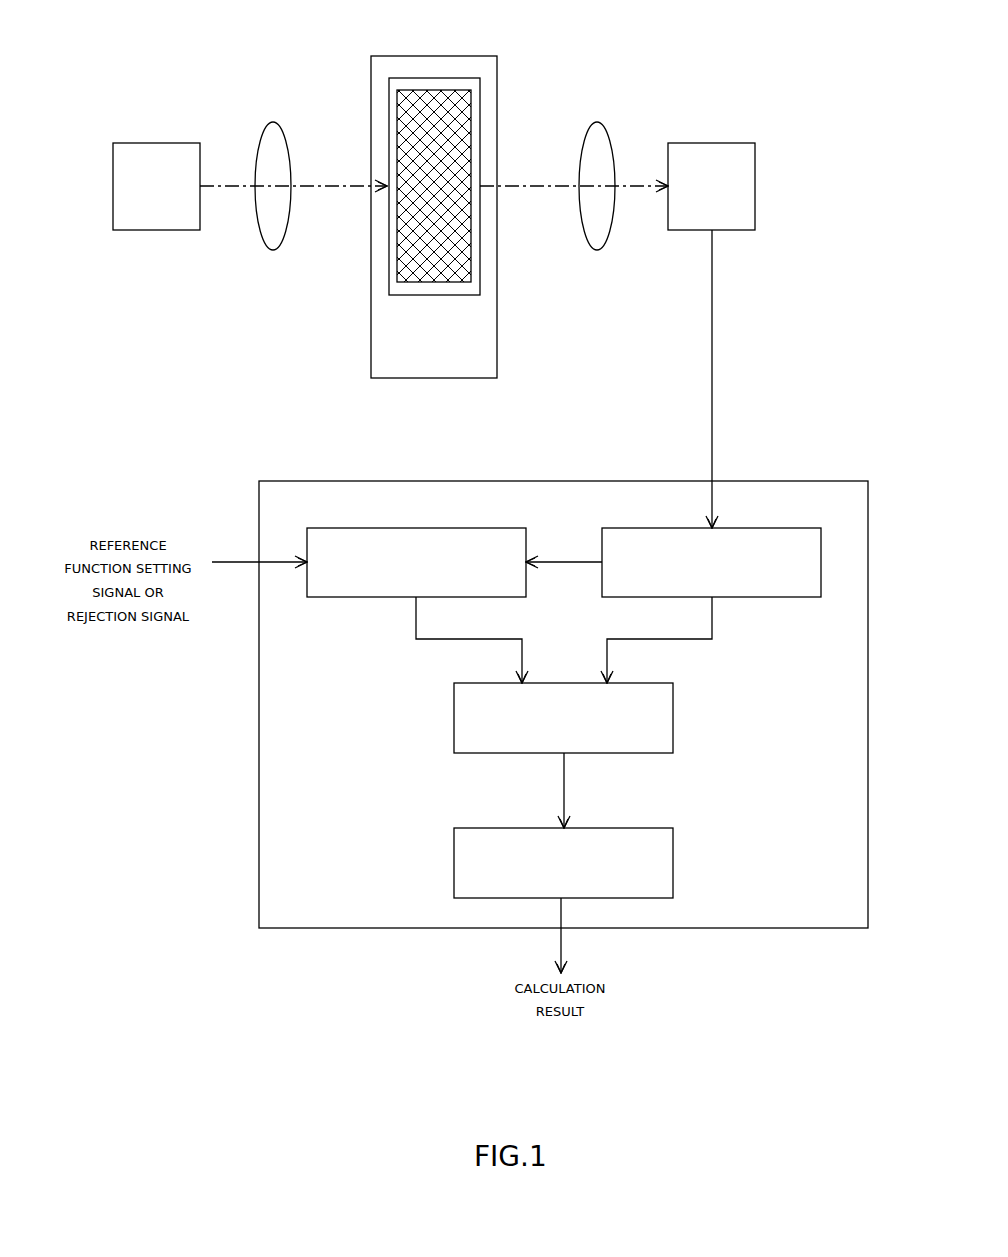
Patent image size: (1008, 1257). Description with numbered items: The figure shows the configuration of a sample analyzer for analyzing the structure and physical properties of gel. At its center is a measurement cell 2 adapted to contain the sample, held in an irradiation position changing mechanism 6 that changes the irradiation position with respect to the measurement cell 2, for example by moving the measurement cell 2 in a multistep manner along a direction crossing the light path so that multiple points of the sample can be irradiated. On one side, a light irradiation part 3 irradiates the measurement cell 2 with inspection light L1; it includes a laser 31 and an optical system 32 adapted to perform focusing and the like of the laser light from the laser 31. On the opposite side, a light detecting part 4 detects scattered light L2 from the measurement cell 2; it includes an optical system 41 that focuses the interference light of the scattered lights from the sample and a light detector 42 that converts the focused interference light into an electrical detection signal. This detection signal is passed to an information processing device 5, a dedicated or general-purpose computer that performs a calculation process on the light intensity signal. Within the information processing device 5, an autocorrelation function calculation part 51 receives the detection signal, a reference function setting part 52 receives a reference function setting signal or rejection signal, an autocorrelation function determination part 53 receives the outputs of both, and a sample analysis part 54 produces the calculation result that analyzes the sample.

The measurement cell 2 is at (432, 78).
The light irradiation part 3 is at (246, 36).
The laser 31 is at (152, 143).
The optical system 32 is at (273, 122).
The light detecting part 4 is at (722, 60).
The optical system 41 is at (597, 122).
The light detector 42 is at (716, 143).
The information processing device 5 is at (566, 481).
The autocorrelation function calculation part 51 is at (765, 597).
The reference function setting part 52 is at (366, 597).
The autocorrelation function determination part 53 is at (673, 718).
The sample analysis part 54 is at (673, 858).
The irradiation position changing mechanism 6 is at (371, 322).
The inspection light L1 is at (336, 184).
The scattered light L2 is at (526, 184).